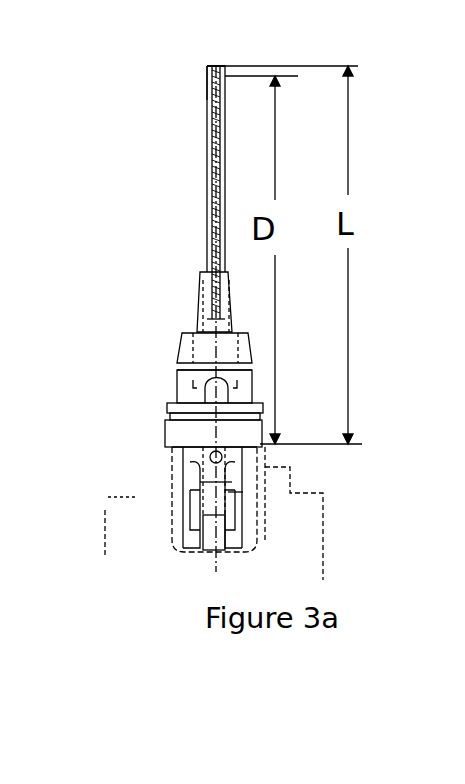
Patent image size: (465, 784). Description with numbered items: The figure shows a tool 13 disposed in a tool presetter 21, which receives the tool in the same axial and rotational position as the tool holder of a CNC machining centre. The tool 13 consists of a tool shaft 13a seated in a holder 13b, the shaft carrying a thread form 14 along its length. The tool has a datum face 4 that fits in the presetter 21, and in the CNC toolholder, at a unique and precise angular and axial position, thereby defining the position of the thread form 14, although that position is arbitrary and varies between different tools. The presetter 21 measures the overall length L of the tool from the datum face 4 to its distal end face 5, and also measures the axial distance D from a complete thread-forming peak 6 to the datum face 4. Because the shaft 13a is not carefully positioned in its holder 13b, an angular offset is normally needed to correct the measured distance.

The datum face 4 is at (263, 447).
The distal end face 5 is at (225, 66).
The complete thread-forming peak 6 is at (288, 77).
The tool 13 is at (205, 172).
The tool shaft 13a is at (205, 193).
The holder 13b is at (207, 290).
The thread form 14 is at (207, 82).
The tool presetter 21 is at (112, 500).